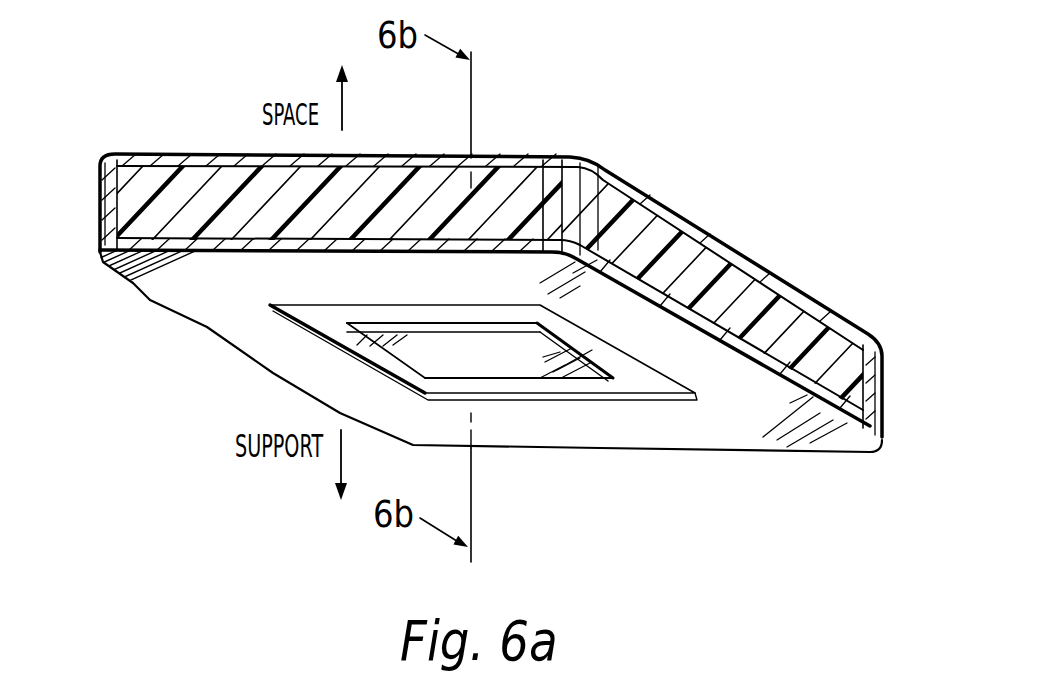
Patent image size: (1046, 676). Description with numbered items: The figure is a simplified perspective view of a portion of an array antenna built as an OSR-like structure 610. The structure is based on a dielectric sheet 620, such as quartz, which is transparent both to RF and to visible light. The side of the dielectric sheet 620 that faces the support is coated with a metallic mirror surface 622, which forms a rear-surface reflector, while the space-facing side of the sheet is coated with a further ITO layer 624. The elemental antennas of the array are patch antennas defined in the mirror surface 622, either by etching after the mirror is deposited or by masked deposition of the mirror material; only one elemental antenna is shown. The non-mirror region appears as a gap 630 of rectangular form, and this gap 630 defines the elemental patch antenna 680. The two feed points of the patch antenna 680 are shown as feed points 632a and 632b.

The OSR-like structure 610 is at (158, 465).
The dielectric sheet 620 is at (100, 212).
The metallic mirror surface 622 is at (141, 300).
The ITO layer 624 is at (550, 157).
The gap 630 is at (652, 386).
The feed point 632a is at (437, 330).
The feed point 632b is at (508, 382).
The elemental patch antenna 680 is at (580, 340).